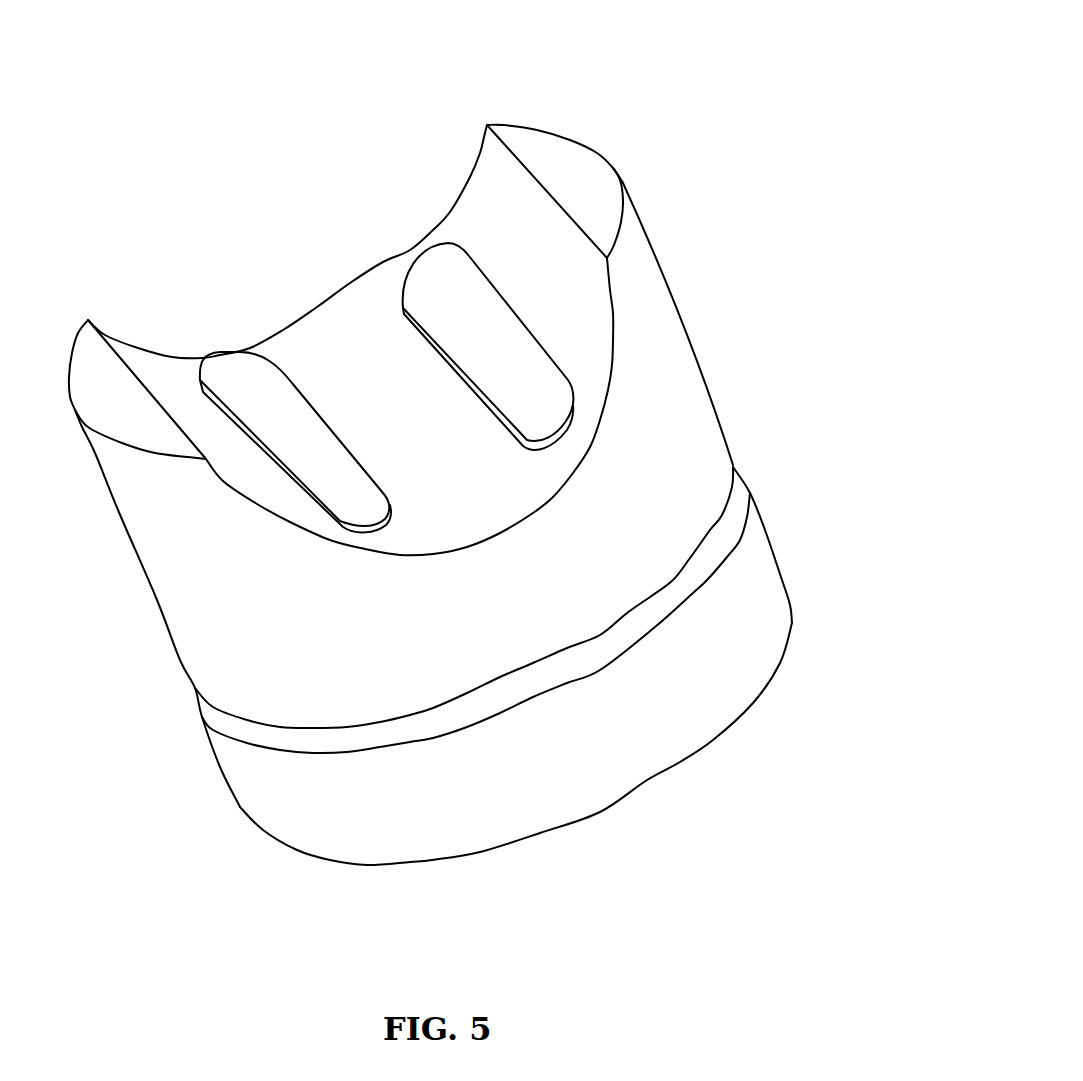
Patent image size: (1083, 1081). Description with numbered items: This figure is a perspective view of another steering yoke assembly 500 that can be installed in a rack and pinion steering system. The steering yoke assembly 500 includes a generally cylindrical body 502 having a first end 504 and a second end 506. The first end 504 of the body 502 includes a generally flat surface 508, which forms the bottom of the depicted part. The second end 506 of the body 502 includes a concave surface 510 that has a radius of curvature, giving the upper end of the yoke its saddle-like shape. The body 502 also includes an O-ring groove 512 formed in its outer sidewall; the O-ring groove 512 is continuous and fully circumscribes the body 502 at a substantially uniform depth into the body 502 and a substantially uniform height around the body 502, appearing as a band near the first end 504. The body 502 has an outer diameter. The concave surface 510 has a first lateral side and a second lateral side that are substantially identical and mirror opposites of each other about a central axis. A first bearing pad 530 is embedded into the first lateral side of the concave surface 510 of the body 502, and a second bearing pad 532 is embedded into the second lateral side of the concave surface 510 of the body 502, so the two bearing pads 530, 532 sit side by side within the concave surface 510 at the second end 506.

The steering yoke assembly 500 is at (658, 45).
The body 502 is at (717, 408).
The first end 504 is at (763, 576).
The second end 506 is at (637, 250).
The generally flat surface 508 is at (683, 760).
The concave surface 510 is at (485, 185).
The O-ring groove 512 is at (735, 500).
The first bearing pad 530 is at (437, 273).
The second bearing pad 532 is at (240, 383).